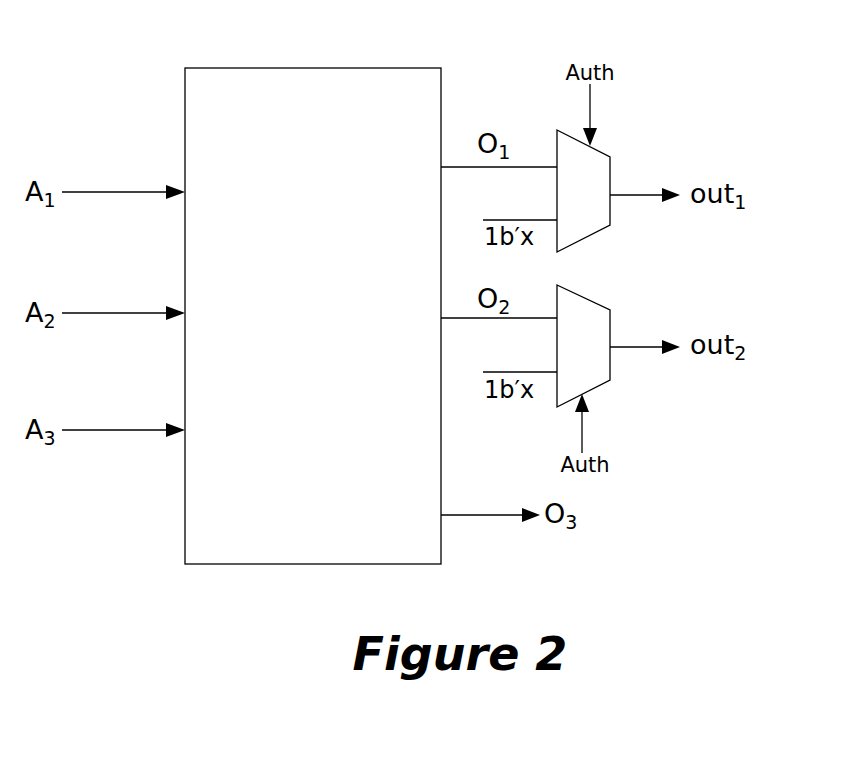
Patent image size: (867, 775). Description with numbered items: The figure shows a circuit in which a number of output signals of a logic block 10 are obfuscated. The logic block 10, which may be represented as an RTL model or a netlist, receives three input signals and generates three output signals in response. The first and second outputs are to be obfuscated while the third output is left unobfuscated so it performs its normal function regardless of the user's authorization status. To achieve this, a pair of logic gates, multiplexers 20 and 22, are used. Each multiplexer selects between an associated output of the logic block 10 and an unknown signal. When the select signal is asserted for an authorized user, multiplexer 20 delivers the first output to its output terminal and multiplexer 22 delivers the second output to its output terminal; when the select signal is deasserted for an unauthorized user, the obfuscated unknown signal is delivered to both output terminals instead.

The logic block 10 is at (332, 395).
The multiplexer 20 is at (597, 233).
The multiplexer 22 is at (597, 388).